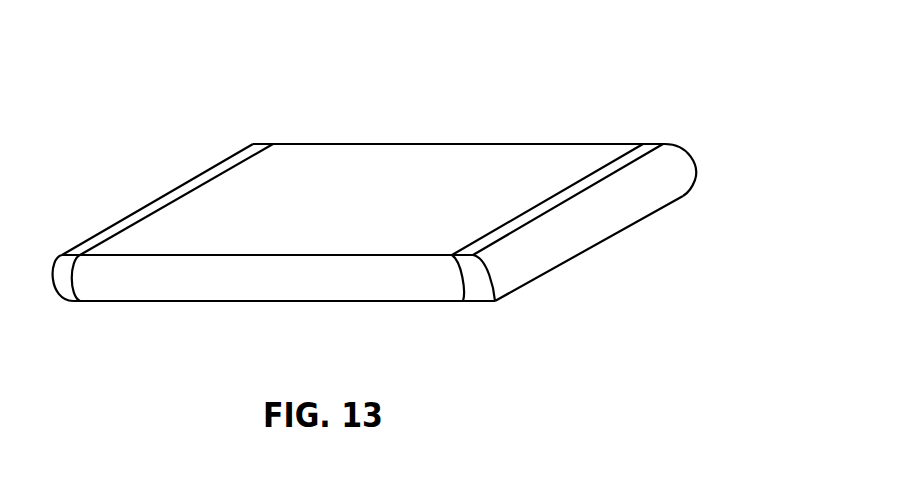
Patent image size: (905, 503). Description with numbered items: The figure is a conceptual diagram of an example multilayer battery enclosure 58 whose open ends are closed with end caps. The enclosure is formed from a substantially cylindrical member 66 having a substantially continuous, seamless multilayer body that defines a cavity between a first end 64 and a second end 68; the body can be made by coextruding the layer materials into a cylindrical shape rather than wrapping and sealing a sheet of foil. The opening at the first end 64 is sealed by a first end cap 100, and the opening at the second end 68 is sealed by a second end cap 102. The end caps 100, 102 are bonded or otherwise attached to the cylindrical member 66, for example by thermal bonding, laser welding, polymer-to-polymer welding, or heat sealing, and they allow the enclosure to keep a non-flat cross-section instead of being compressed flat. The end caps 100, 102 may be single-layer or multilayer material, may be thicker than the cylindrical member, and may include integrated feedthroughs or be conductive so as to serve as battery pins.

The multilayer battery enclosure 58 is at (406, 171).
The first end 64 is at (692, 174).
The substantially cylindrical member 66 is at (352, 199).
The second end 68 is at (152, 112).
The first end cap 100 is at (555, 245).
The second end cap 102 is at (100, 238).